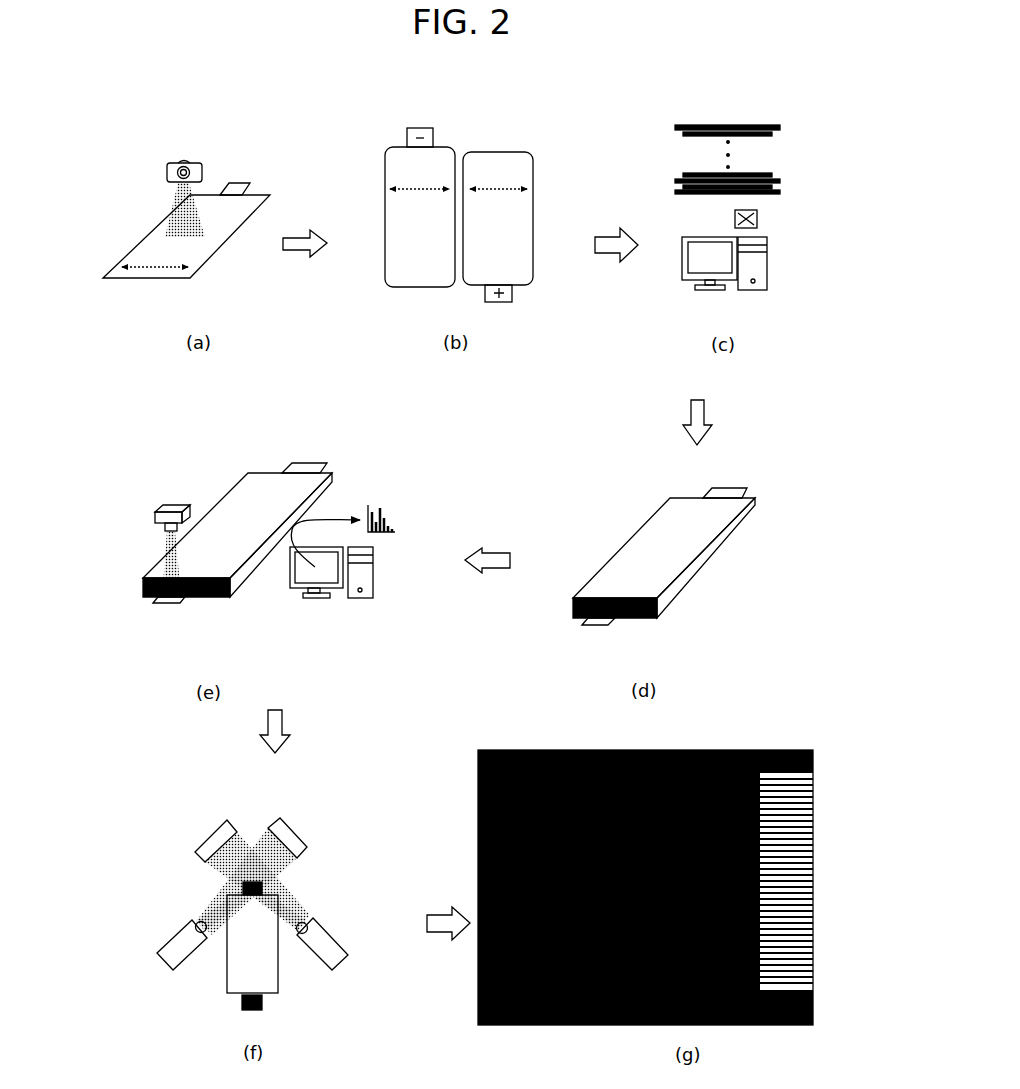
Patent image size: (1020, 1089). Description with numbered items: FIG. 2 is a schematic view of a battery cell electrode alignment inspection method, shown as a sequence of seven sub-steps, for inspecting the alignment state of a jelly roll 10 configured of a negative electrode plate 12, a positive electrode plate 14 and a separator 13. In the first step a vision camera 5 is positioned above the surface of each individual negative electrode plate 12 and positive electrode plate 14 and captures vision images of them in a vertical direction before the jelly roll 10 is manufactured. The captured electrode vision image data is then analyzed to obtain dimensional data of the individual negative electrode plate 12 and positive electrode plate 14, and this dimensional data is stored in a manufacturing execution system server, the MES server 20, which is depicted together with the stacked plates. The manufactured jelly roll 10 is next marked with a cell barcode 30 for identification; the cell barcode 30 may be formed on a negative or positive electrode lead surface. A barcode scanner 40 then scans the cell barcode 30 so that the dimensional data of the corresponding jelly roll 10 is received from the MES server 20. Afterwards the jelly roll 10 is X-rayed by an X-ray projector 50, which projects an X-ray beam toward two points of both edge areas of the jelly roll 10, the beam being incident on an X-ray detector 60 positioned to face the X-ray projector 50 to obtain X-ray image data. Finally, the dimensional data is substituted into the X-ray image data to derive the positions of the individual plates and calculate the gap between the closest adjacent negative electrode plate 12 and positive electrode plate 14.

The vision camera 5 is at (197, 158).
The jelly roll 10 is at (683, 108).
The negative electrode plate 12 is at (140, 252).
The separator 13 is at (782, 137).
The positive electrode plate 14 is at (526, 165).
The MES server 20 is at (672, 293).
The cell barcode 30 is at (616, 623).
The barcode scanner 40 is at (172, 504).
The X-ray projector 50 is at (170, 943).
The X-ray detector 60 is at (212, 840).